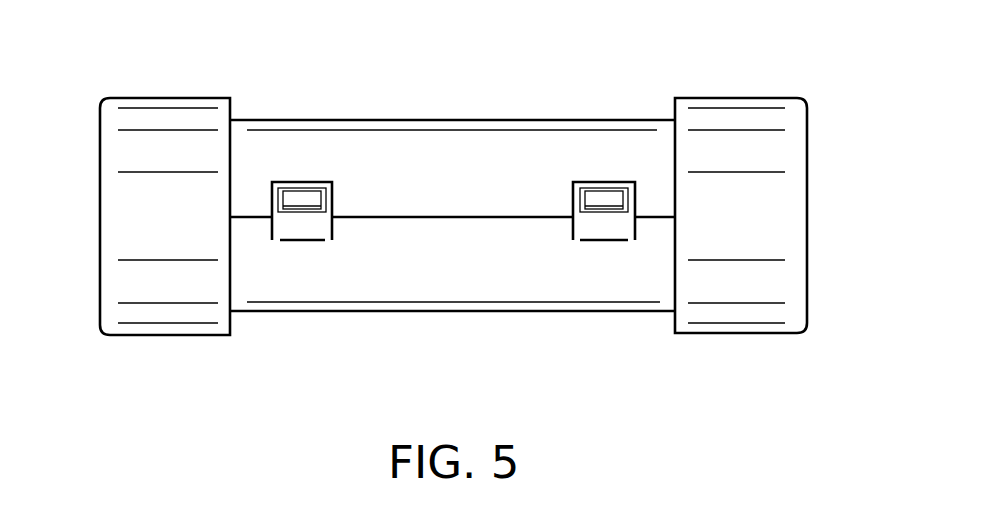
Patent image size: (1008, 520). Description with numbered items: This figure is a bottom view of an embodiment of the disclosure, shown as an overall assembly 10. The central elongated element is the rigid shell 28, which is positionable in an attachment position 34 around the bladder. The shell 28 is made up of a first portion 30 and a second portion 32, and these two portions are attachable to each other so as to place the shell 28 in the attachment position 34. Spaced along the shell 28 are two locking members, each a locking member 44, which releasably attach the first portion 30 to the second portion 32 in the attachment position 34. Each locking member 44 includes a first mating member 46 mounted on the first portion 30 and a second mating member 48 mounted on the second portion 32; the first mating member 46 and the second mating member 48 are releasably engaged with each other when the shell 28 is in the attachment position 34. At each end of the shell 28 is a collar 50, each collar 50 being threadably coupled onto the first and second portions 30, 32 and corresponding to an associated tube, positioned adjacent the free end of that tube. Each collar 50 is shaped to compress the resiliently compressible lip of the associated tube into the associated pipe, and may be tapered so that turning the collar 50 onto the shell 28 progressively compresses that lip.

The shelf assembly 10 is at (686, 382).
The shell 28 is at (455, 114).
The first portion 30 is at (380, 150).
The second portion 32 is at (370, 288).
The attachment position 34 is at (497, 336).
The locking member 44 is at (289, 257).
The first mating member 46 is at (298, 198).
The second mating member 48 is at (307, 229).
The collar 50 is at (140, 210).